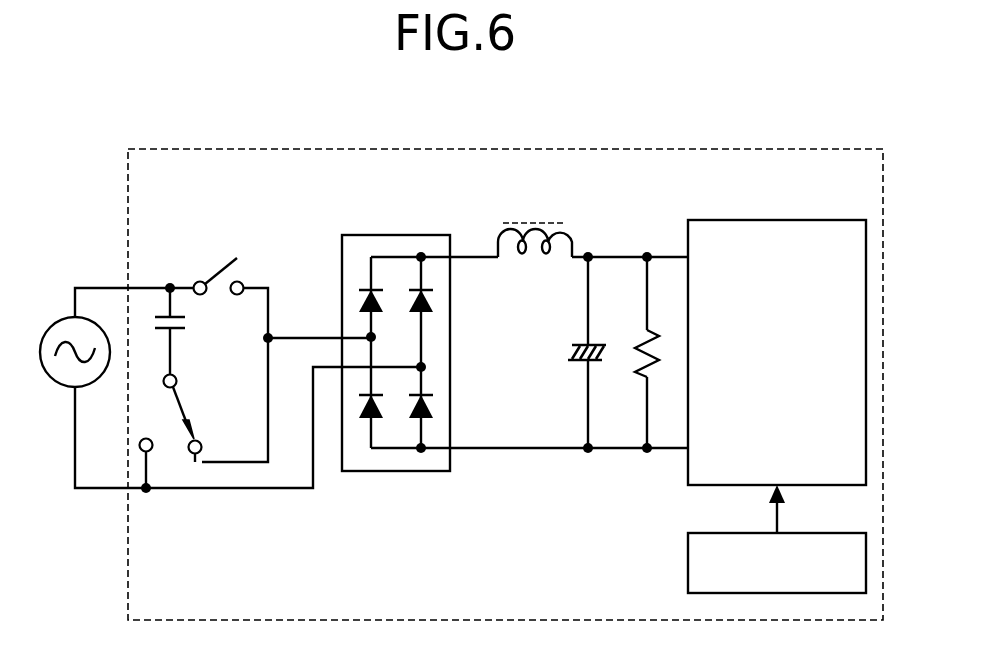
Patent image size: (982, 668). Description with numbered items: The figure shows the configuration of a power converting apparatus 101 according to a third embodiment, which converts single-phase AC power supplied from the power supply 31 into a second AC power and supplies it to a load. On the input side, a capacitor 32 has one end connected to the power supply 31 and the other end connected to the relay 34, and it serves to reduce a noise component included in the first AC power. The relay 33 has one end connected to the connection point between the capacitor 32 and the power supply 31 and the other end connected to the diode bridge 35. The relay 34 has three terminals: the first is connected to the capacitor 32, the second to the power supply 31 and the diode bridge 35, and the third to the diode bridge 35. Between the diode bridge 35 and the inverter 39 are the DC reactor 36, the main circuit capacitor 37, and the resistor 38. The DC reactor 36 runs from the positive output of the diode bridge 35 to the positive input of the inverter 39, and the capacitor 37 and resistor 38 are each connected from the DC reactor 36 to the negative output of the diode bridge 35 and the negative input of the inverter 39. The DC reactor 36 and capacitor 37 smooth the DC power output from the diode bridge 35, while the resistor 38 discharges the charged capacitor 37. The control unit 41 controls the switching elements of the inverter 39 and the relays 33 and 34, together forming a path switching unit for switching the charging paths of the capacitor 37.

The power converting apparatus 101 is at (779, 149).
The power supply 31 is at (54, 316).
The capacitor 32 is at (160, 312).
The relay 33 is at (214, 268).
The relay 34 is at (153, 447).
The diode bridge 35 is at (397, 235).
The DC reactor 36 is at (536, 222).
The capacitor 37 is at (580, 364).
The resistor 38 is at (656, 338).
The inverter 39 is at (778, 220).
The control unit 41 is at (688, 561).